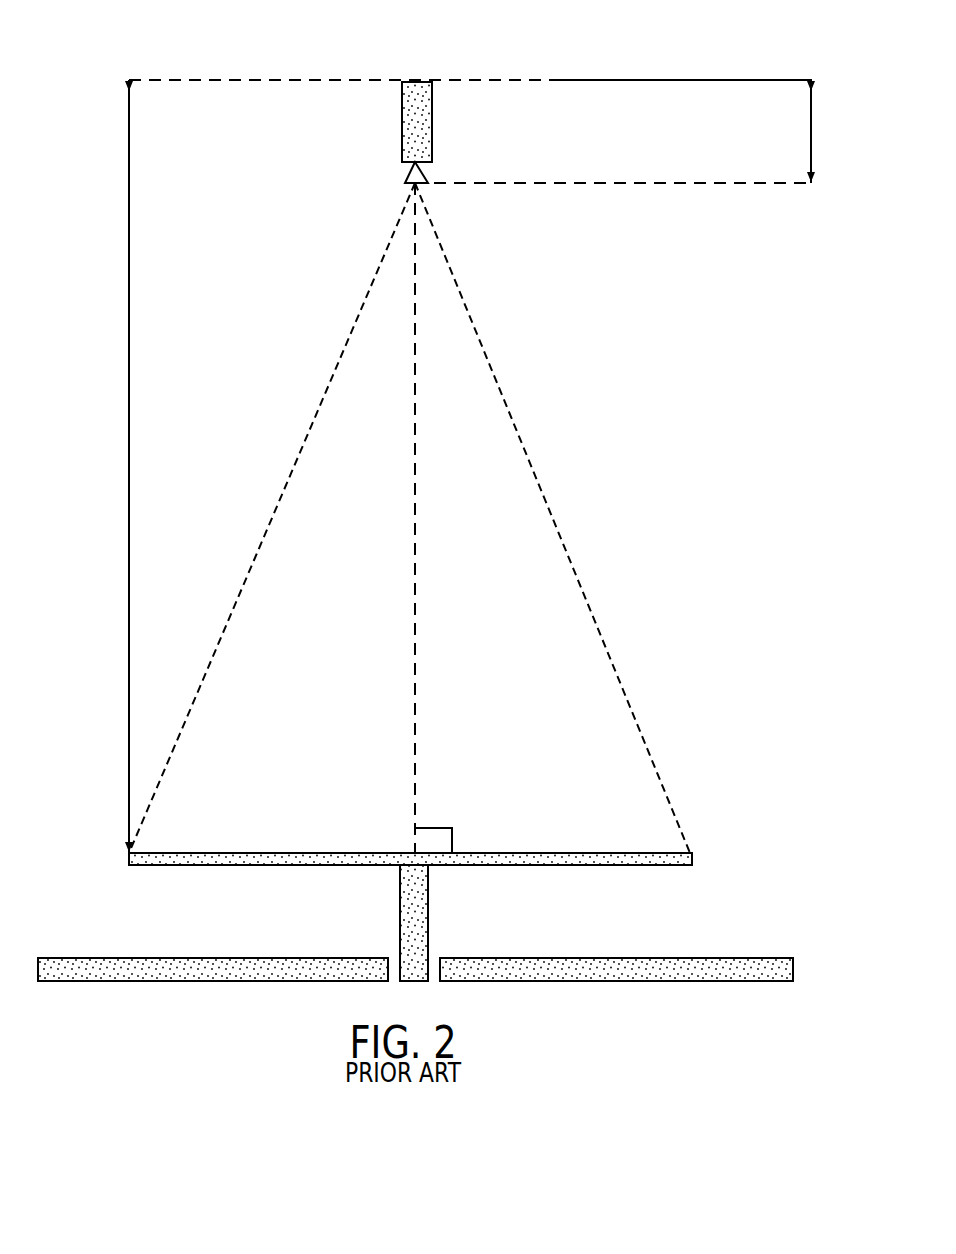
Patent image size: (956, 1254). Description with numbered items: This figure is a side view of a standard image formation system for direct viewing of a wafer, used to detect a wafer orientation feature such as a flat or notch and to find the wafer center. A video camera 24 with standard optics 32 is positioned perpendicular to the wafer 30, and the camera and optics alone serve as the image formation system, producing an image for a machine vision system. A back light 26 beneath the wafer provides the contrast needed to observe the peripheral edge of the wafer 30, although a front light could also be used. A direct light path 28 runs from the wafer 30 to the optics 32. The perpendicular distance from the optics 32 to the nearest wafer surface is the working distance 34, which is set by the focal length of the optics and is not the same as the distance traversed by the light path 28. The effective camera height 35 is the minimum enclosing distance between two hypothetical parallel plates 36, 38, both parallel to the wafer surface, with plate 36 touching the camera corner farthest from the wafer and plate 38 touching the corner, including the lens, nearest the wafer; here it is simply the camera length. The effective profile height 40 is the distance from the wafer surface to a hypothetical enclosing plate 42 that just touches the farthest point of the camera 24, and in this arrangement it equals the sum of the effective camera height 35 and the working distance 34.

The video camera 24 is at (402, 116).
The back light 26 is at (248, 958).
The direct light path 28 is at (531, 460).
The wafer 30 is at (515, 853).
The optics 32 is at (408, 176).
The working distance 34 is at (418, 592).
The effective camera height 35 is at (810, 131).
The hypothetical parallel plate 36 is at (565, 80).
The hypothetical parallel plate 38 is at (593, 181).
The effective profile height 40 is at (128, 337).
The hypothetical parallel plate 42 is at (226, 80).